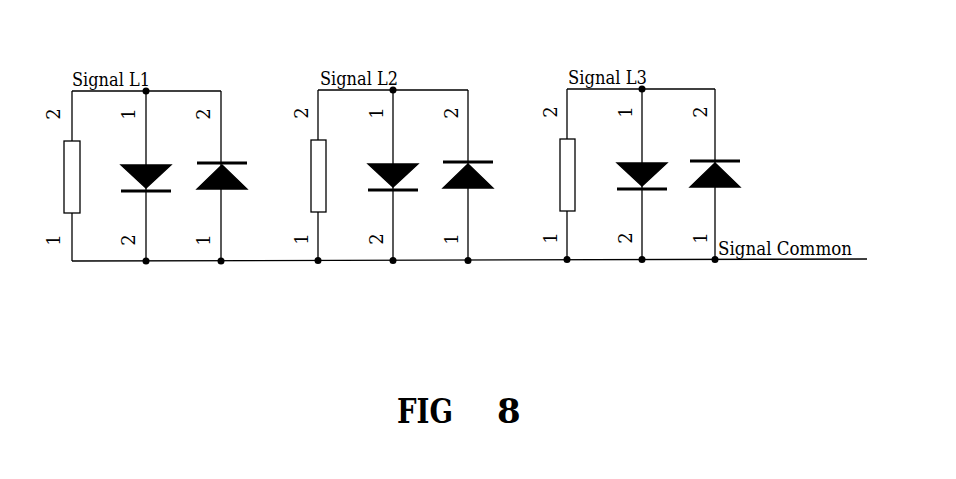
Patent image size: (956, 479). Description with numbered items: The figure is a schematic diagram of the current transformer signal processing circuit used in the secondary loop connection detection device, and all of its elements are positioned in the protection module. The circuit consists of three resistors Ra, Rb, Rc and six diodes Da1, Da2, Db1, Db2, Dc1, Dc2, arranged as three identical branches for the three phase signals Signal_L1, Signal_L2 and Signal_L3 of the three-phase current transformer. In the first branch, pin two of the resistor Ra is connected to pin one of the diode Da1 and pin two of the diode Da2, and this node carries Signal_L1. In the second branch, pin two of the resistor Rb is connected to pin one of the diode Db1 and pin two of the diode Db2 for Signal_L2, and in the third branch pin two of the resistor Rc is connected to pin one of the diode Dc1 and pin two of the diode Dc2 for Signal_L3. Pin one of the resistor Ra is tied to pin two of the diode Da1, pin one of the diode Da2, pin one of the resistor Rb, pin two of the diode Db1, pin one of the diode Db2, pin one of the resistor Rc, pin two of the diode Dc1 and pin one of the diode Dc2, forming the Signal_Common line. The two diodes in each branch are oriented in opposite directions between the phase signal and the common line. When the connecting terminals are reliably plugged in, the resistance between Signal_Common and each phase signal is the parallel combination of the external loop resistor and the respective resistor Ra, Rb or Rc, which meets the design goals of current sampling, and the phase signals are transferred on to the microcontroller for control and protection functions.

The resistor Ra is at (57, 176).
The resistor Rb is at (304, 175).
The resistor Rc is at (553, 174).
The diode Da1 is at (137, 176).
The diode Da2 is at (212, 176).
The diode Db1 is at (384, 175).
The diode Db2 is at (459, 175).
The diode Dc1 is at (632, 174).
The diode Dc2 is at (706, 174).